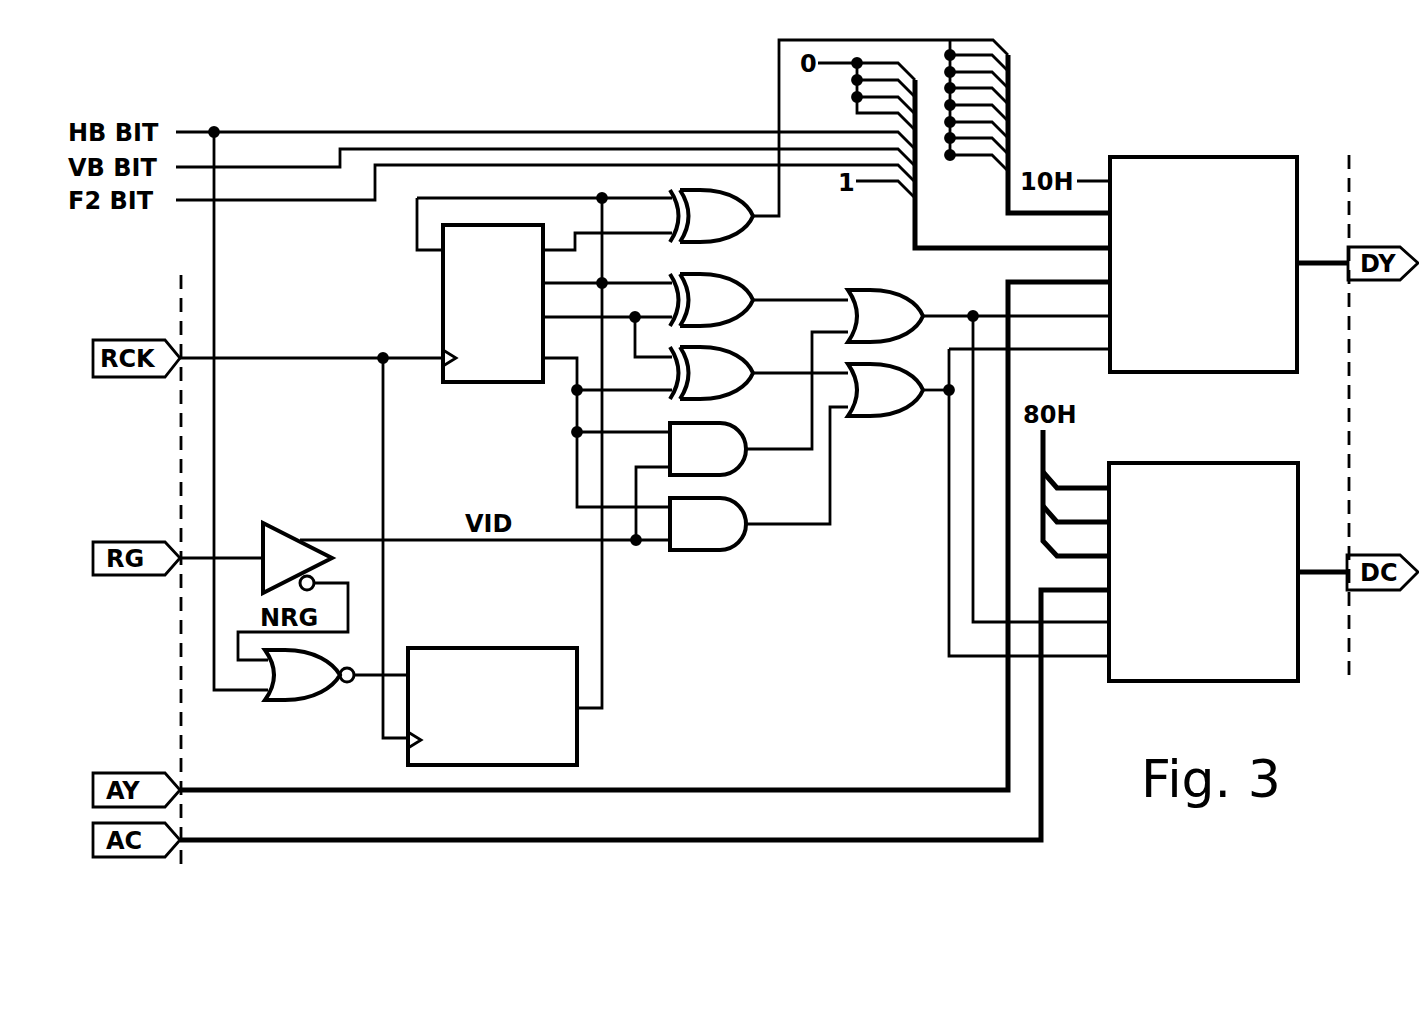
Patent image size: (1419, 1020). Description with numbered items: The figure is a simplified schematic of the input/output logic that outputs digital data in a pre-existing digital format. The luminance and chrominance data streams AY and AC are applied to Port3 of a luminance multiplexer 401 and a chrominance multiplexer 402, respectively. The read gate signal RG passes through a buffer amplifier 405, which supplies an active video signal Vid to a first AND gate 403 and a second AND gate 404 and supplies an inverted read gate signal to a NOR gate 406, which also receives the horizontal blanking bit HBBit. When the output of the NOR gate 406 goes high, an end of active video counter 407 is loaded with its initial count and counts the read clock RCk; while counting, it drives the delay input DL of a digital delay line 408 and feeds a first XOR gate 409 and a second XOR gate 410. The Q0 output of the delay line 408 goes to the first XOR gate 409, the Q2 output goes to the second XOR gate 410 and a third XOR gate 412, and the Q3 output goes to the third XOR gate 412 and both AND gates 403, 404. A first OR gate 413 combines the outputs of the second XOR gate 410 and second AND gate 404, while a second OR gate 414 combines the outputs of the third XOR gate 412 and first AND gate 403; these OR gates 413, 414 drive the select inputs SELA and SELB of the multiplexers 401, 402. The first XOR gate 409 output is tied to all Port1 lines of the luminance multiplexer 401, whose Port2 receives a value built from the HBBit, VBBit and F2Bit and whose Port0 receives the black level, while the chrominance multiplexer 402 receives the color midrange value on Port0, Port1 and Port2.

The luminance multiplexer 401 is at (1171, 157).
The chrominance multiplexer 402 is at (1174, 463).
The first AND gate 403 is at (715, 550).
The second AND gate 404 is at (750, 457).
The buffer amplifier 405 is at (285, 535).
The NOR gate 406 is at (330, 690).
The end of active video (EAV) counter 407 is at (465, 648).
The digital delay line 408 is at (510, 382).
The first exclusive-OR (XOR) gate 409 is at (750, 232).
The second exclusive-OR (XOR) gate 410 is at (720, 273).
The third exclusive-OR (XOR) gate 412 is at (715, 347).
The first OR gate 413 is at (885, 290).
The second OR gate 414 is at (903, 417).